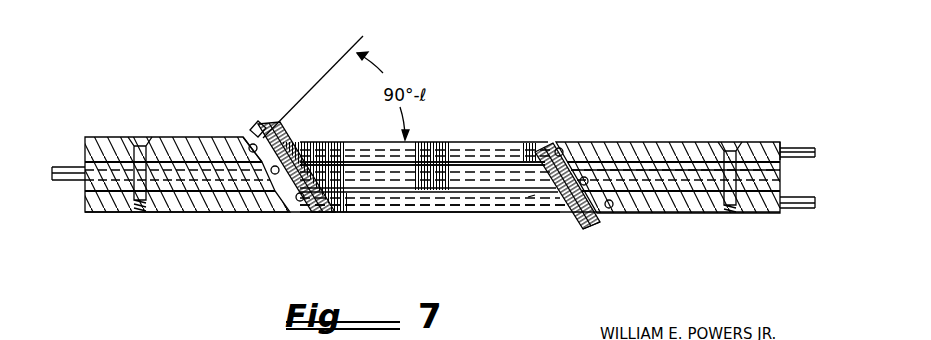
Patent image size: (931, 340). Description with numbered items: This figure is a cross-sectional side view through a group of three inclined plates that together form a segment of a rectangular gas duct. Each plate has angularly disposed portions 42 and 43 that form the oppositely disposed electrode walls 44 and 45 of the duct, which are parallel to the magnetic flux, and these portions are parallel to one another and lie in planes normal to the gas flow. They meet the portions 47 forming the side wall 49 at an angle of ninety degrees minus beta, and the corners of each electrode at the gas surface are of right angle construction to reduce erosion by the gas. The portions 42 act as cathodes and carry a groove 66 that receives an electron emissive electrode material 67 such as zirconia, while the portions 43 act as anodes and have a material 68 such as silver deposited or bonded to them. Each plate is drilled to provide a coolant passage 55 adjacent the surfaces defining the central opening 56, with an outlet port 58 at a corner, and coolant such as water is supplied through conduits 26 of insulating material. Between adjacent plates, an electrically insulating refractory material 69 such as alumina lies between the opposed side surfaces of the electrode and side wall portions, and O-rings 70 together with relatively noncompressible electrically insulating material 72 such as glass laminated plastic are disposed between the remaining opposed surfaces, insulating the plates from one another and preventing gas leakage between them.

The conduits 26 is at (72, 163).
The portion of plate forming electrode wall 42 is at (308, 137).
The portion of plate forming electrode wall 43 is at (580, 203).
The electrode wall 44 is at (277, 110).
The electrode wall 45 is at (582, 238).
The portion of plate forming side wall 47 is at (450, 145).
The side wall 49 is at (404, 200).
The coolant passage 55 is at (552, 150).
The central opening 56 is at (432, 206).
The outlet port 58 is at (785, 145).
The groove 66 is at (250, 140).
The electron emissive electrode material 67 is at (262, 124).
The material 68 is at (528, 200).
The electrically insulating refractory material 69 is at (607, 155).
The O-rings 70 is at (647, 157).
The electrically insulating material 72 is at (120, 161).